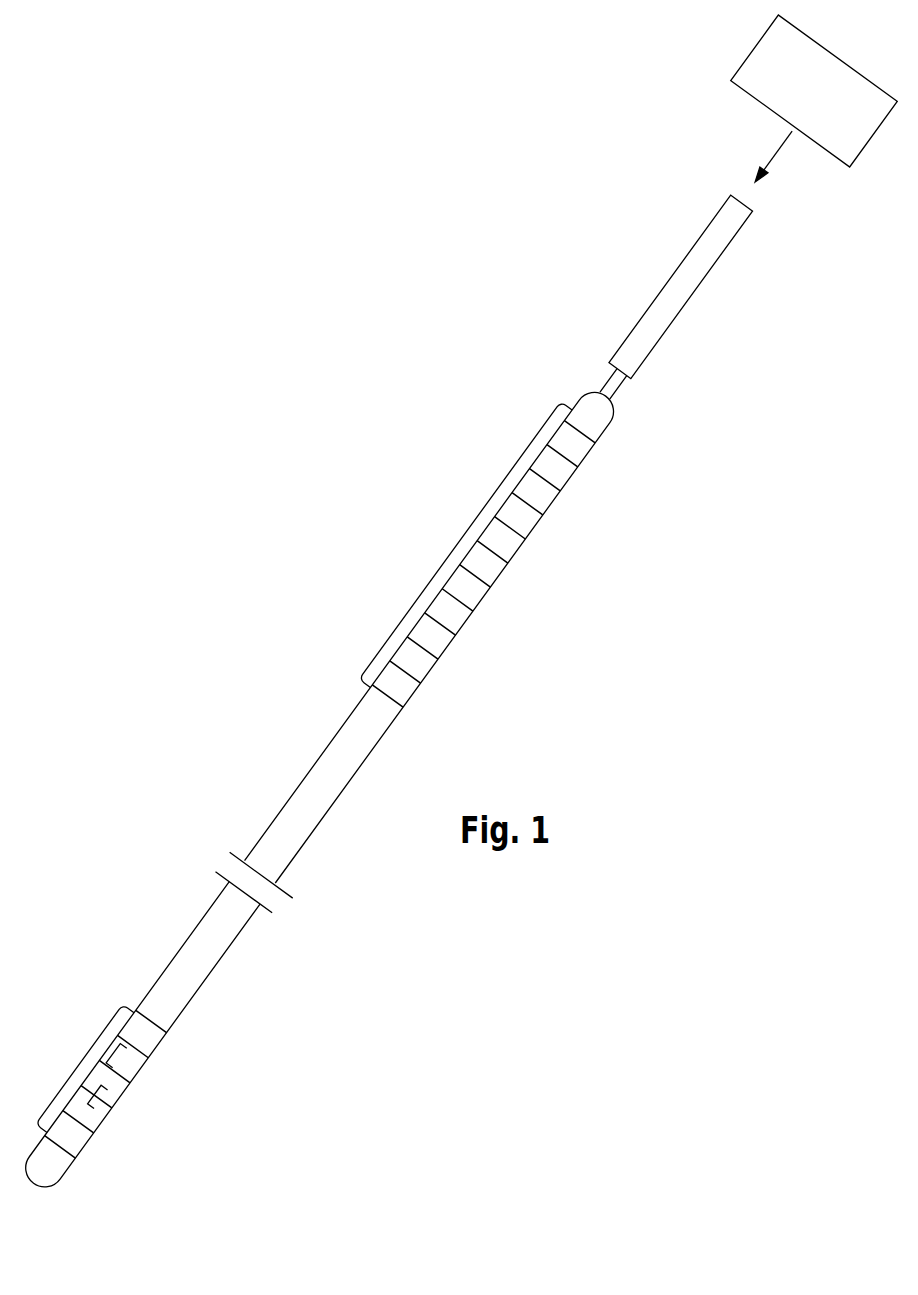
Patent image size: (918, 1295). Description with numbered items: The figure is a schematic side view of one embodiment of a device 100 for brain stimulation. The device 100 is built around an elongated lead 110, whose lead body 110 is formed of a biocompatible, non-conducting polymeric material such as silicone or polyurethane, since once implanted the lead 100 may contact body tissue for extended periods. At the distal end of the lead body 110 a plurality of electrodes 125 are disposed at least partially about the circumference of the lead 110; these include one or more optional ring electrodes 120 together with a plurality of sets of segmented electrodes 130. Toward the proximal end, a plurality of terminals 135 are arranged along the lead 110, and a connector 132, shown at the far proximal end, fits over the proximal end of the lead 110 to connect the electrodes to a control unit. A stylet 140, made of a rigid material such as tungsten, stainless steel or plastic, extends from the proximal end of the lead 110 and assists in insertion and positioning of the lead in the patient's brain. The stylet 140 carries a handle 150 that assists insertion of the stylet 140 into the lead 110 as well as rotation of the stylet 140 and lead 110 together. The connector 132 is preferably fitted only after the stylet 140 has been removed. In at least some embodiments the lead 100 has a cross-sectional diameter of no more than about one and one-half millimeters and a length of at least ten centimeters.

The device for brain stimulation 100 is at (247, 608).
The lead 110 is at (298, 793).
The ring electrodes 120 is at (163, 1033).
The electrodes 125 is at (87, 1072).
The segmented electrodes 130 is at (112, 1110).
The connector 132 is at (745, 62).
The terminals 135 is at (458, 552).
The stylet 140 is at (610, 380).
The handle 150 is at (672, 288).